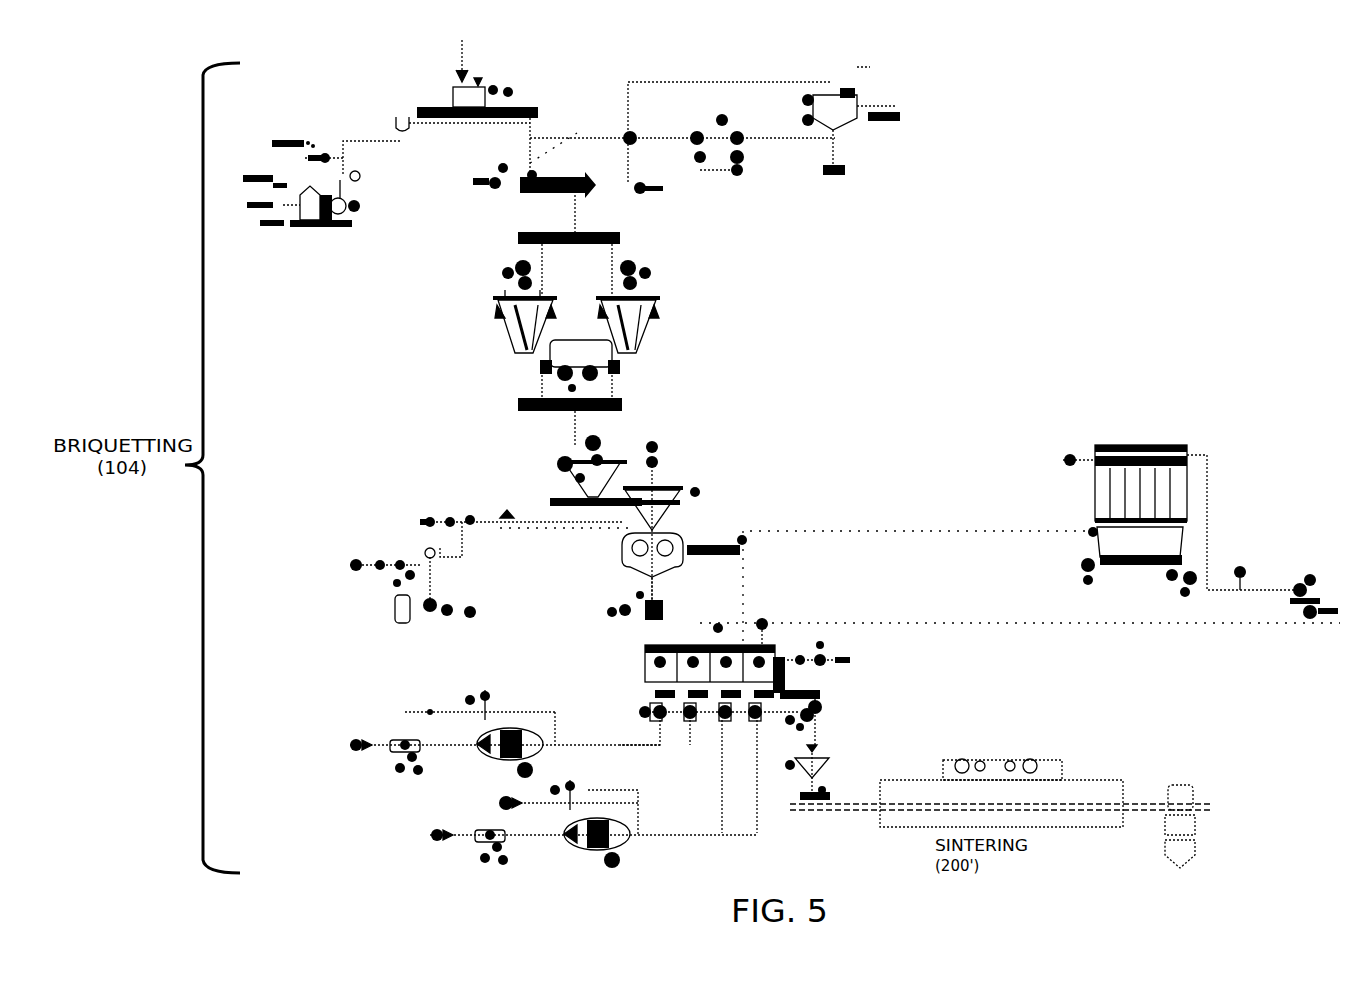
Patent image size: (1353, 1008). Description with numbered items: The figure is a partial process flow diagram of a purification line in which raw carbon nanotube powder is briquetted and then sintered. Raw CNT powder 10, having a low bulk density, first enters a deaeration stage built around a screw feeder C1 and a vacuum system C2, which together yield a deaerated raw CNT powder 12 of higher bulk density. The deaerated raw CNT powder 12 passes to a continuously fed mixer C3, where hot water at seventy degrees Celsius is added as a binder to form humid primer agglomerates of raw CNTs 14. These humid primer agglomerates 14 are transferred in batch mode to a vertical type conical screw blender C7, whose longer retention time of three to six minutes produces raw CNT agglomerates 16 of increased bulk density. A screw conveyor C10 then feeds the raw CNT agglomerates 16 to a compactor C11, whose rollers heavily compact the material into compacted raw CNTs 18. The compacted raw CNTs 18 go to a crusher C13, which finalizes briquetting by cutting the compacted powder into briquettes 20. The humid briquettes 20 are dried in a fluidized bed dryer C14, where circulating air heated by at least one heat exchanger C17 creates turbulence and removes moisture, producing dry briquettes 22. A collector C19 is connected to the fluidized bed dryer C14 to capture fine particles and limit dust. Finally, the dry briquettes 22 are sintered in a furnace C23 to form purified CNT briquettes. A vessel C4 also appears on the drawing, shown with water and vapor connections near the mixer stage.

The raw CNT powder 10 is at (478, 28).
The deaerated raw CNT powder 12 is at (530, 142).
The humid primer agglomerates of raw CNTs 14 is at (580, 217).
The raw CNT agglomerates 16 is at (580, 434).
The compacted raw CNTs 18 is at (650, 585).
The briquettes 20 is at (655, 643).
The dry briquettes 22 is at (815, 728).
The screw feeder C1 is at (458, 90).
The vacuum system C2 is at (338, 128).
The mixer C3 is at (523, 190).
The mixer vessel C4 is at (842, 95).
The vertical type conical screw blender C7 is at (683, 340).
The screw conveyor C10 is at (585, 487).
The compactor C11 is at (706, 526).
The crusher C13 is at (640, 612).
The fluidized bed dryer C14 is at (770, 658).
The heat exchanger C17 is at (538, 742).
The collector C19 is at (1172, 492).
The furnace C23 is at (1097, 780).